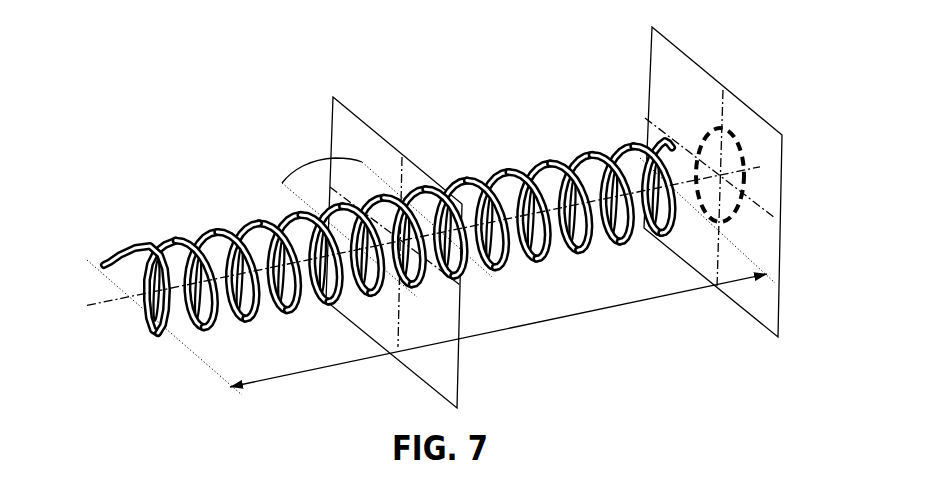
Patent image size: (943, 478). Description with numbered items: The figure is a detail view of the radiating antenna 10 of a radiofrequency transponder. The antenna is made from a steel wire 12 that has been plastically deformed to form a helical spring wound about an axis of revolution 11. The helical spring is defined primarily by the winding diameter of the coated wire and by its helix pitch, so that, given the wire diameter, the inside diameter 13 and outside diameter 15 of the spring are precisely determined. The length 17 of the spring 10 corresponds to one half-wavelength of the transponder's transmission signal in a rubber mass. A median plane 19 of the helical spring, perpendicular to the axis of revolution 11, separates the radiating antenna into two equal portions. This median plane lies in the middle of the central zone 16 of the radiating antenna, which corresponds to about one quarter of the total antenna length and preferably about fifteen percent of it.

The radiating antenna 10 is at (388, 193).
The axis of revolution 11 is at (114, 310).
The steel wire 12 is at (257, 230).
The inside diameter 13 is at (705, 138).
The outside diameter 15 is at (720, 125).
The central zone 16 is at (309, 161).
The length 17 is at (637, 310).
The median plane 19 is at (463, 383).